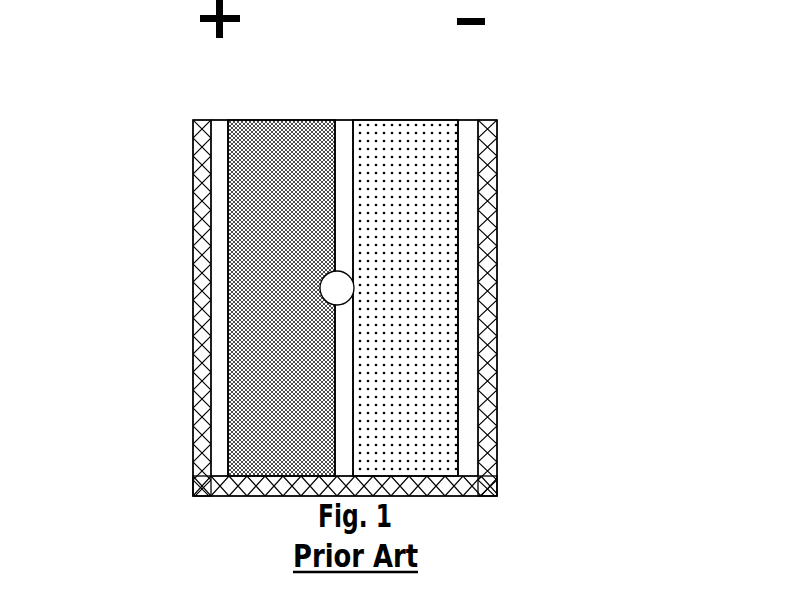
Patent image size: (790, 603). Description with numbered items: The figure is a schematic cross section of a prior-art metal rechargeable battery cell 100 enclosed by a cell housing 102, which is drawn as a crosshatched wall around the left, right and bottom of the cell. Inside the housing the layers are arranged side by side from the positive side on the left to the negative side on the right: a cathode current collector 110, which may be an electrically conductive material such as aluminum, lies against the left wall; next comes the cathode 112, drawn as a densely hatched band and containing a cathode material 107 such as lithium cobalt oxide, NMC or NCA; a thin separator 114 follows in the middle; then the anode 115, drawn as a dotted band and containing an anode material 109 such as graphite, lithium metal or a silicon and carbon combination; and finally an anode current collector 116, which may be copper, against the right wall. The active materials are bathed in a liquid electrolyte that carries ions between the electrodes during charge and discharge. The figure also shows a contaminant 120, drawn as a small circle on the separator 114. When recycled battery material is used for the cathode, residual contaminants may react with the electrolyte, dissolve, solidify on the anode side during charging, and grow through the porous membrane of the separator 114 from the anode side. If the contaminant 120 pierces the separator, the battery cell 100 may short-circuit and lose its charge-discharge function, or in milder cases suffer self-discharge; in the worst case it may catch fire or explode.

The rechargeable battery cell 100 is at (520, 366).
The cell housing 102 is at (497, 317).
The cathode material 107 is at (247, 442).
The anode material 109 is at (432, 237).
The cathode current collector 110 is at (218, 160).
The cathode 112 is at (283, 372).
The separator 114 is at (347, 120).
The anode 115 is at (442, 317).
The anode current collector 116 is at (470, 172).
The contaminant 120 is at (336, 290).